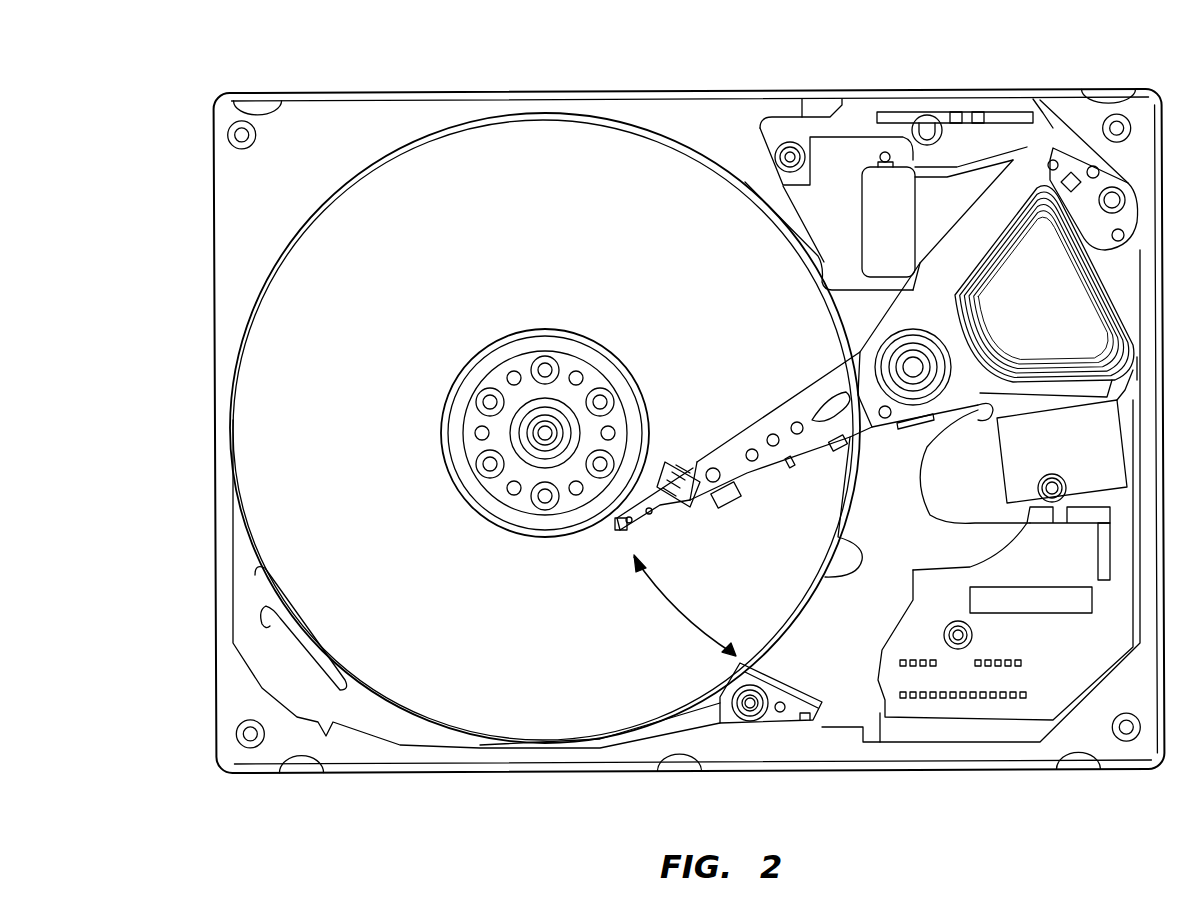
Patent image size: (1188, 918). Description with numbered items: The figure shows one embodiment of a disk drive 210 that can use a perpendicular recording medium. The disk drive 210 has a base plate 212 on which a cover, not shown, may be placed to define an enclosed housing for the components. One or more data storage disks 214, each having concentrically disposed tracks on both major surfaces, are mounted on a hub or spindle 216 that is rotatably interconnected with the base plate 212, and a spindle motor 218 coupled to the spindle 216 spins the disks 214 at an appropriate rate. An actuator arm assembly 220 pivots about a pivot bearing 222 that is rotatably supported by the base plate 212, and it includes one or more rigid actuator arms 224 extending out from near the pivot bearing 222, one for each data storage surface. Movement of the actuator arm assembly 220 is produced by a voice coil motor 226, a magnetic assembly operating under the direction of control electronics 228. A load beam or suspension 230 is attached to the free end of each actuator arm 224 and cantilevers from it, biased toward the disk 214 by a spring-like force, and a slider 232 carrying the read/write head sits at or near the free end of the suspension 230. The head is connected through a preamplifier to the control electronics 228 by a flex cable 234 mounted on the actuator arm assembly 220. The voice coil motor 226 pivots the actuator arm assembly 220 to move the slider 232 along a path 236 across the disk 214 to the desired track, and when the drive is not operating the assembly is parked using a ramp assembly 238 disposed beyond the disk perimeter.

The disk drive 210 is at (148, 192).
The base plate 212 is at (418, 92).
The data storage disk 214 is at (553, 143).
The spindle 216 is at (568, 332).
The spindle motor 218 is at (520, 410).
The actuator arm assembly 220 is at (790, 386).
The pivot bearing 222 is at (905, 395).
The actuator arm 224 is at (765, 470).
The voice coil motor 226 is at (1026, 272).
The control electronics 228 is at (966, 708).
The suspension 230 is at (665, 484).
The slider 232 is at (615, 530).
The flex cable 234 is at (926, 505).
The path 236 is at (668, 620).
The ramp assembly 238 is at (778, 705).